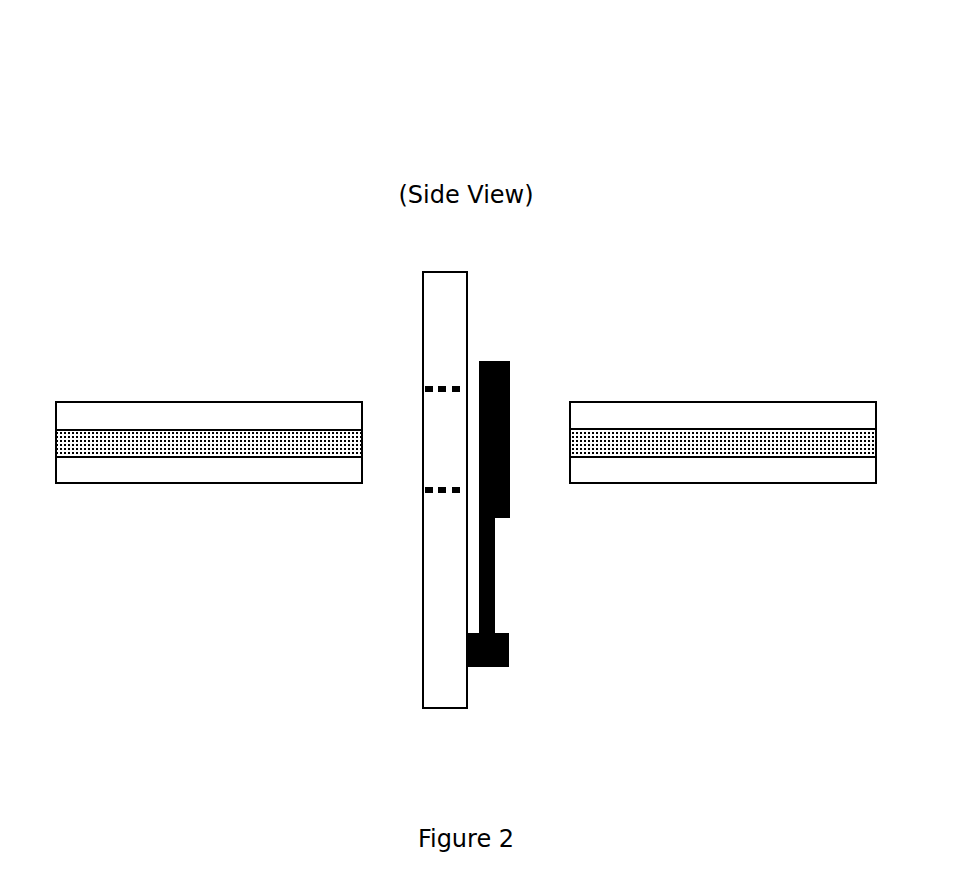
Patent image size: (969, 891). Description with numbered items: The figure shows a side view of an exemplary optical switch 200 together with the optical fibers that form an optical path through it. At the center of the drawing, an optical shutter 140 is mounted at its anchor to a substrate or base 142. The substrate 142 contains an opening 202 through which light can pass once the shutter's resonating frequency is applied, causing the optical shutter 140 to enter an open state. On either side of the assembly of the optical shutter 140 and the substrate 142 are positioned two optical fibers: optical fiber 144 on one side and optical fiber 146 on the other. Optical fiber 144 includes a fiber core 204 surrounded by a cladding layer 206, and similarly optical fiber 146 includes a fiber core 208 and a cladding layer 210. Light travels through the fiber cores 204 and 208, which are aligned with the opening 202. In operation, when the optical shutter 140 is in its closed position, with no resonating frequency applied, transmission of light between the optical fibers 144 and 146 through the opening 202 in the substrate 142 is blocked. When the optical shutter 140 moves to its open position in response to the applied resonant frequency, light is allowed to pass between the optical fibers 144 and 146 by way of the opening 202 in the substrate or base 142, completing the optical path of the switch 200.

The optical switch 200 is at (183, 77).
The substrate 142 is at (430, 479).
The optical shutter 140 is at (496, 353).
The opening 202 is at (445, 397).
The optical fiber 144 is at (203, 406).
The optical fiber 146 is at (723, 405).
The fiber core 204 is at (203, 360).
The cladding layer 206 is at (299, 475).
The fiber core 208 is at (723, 381).
The cladding layer 210 is at (853, 478).